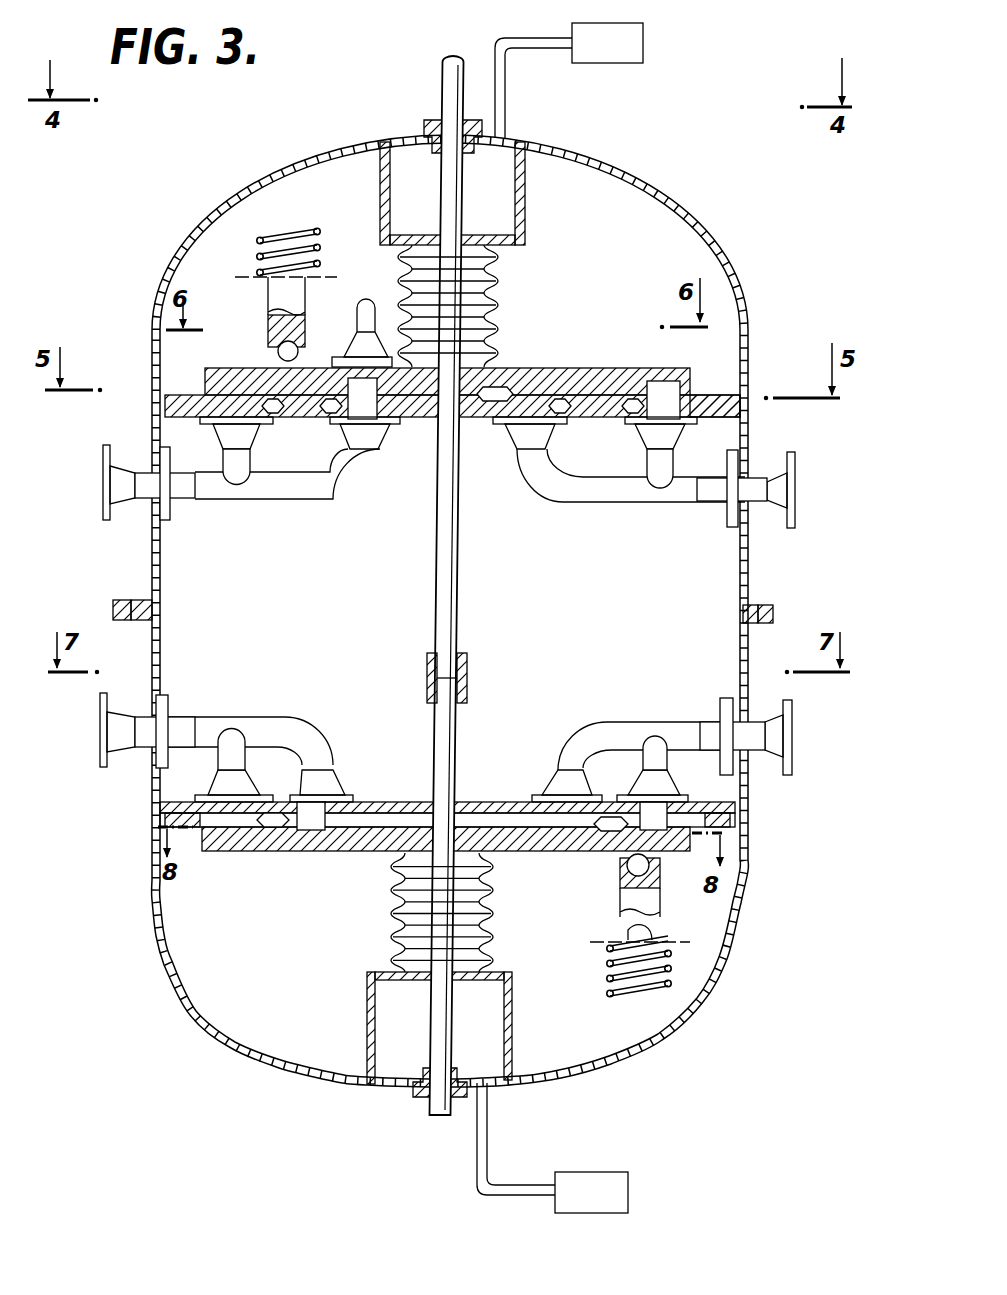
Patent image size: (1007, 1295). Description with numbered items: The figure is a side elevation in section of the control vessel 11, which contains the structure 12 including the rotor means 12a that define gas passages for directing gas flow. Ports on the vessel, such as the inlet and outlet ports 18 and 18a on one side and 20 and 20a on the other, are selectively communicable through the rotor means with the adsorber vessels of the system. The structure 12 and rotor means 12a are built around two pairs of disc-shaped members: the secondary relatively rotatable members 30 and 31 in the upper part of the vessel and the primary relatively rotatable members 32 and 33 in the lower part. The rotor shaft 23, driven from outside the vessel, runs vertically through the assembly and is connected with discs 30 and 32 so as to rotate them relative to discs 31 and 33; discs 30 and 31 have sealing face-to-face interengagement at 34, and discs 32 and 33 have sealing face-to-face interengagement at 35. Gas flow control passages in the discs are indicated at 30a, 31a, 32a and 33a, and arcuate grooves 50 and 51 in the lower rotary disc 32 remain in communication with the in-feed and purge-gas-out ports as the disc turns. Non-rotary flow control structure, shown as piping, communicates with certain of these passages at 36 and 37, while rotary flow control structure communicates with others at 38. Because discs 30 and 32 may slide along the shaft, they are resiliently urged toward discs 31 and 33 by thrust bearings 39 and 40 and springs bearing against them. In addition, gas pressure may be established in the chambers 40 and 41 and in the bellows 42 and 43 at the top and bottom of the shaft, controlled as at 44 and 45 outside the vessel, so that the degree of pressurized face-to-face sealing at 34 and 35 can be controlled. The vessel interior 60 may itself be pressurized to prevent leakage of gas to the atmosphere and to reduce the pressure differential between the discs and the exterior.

The control vessel 11 is at (705, 186).
The structure 12 is at (252, 507).
The rotor means 12a is at (707, 370).
The inlet port 18 is at (797, 462).
The outlet port 18a is at (790, 762).
The inlet port 20 is at (103, 467).
The outlet port 20a is at (105, 765).
The rotor shaft 23 is at (452, 598).
The secondary relatively rotatable member 30 is at (613, 365).
The gas flow control passage 30a is at (560, 395).
The secondary relatively rotatable member 31 is at (607, 422).
The gas flow control passage 31a is at (555, 402).
The primary relatively rotatable member 32 is at (352, 863).
The gas flow control passage 32a is at (258, 852).
The primary relatively rotatable member 33 is at (385, 800).
The gas flow control passage 33a is at (273, 813).
The sealing face-to-face interengagement 34 is at (293, 407).
The sealing face-to-face interengagement 35 is at (543, 851).
The non-rotary flow control structure 36 is at (337, 500).
The non-rotary flow control structure 37 is at (227, 710).
The rotary flow control structure 38 is at (364, 297).
The thrust bearing 39 is at (258, 336).
The thrust bearing 40 is at (505, 185).
The chamber 41 is at (387, 1023).
The bellows 42 is at (492, 293).
The bellows 43 is at (392, 940).
The pressure control 44 is at (643, 40).
The pressure control 45 is at (613, 1193).
The arcuate groove 50 is at (646, 924).
The arcuate groove 51 is at (312, 831).
The vessel interior 60 is at (590, 657).